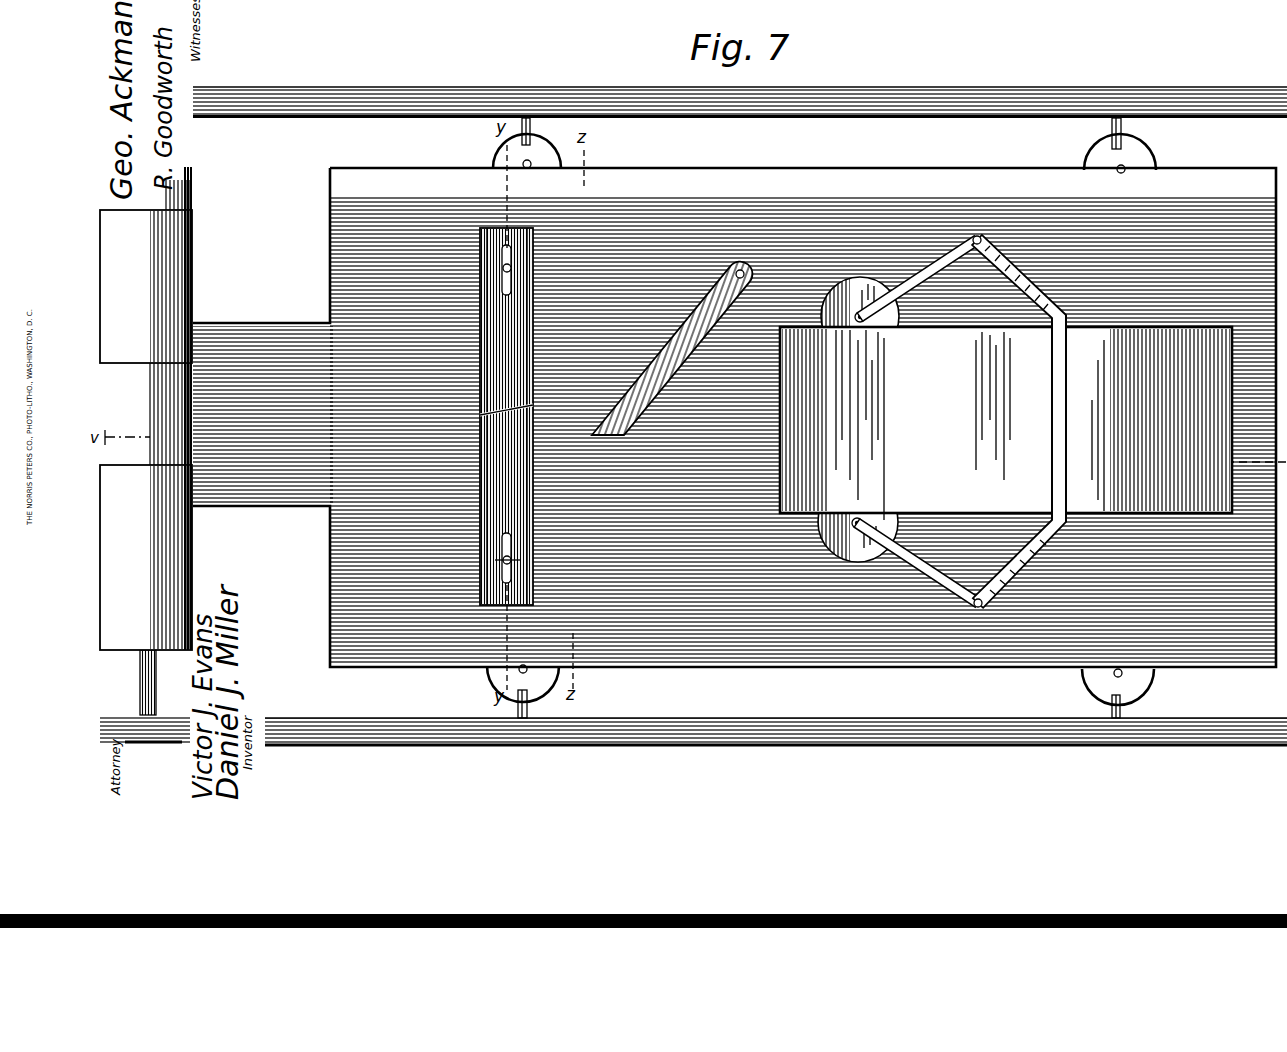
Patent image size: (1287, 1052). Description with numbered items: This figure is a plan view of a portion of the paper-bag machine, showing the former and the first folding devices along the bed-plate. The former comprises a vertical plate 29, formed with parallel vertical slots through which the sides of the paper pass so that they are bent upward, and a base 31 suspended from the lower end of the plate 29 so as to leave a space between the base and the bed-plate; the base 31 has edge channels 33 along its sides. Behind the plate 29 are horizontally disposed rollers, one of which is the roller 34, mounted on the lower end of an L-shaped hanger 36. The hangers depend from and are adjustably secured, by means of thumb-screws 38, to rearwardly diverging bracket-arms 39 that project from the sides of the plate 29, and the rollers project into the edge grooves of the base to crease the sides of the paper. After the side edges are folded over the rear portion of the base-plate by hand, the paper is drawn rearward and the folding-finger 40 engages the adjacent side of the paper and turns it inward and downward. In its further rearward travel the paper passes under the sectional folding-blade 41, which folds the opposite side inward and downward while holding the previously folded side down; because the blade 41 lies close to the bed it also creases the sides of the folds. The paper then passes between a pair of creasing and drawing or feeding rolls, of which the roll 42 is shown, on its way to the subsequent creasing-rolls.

The vertical plate 29 is at (1067, 427).
The base 31 is at (1006, 423).
The edge channels 33 is at (146, 430).
The roller 34 is at (880, 513).
The L-shaped hanger 36 is at (879, 320).
The thumb-screws 38 is at (483, 332).
The bracket-arms 39 is at (937, 258).
The folding-finger 40 is at (672, 348).
The sectional folding-blade 41 is at (506, 416).
The creasing and feeding roll 42 is at (193, 313).